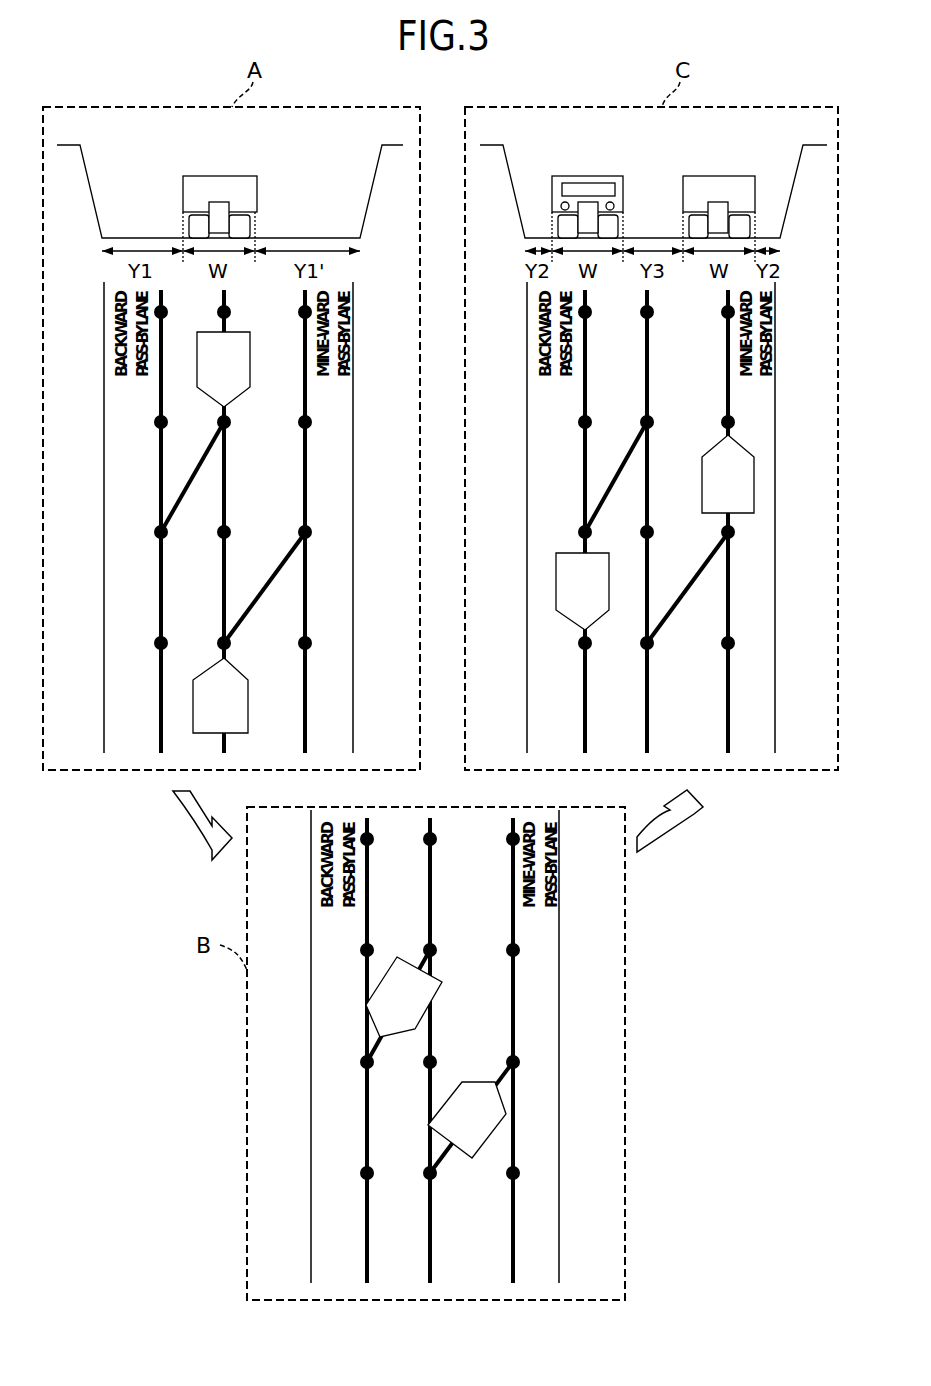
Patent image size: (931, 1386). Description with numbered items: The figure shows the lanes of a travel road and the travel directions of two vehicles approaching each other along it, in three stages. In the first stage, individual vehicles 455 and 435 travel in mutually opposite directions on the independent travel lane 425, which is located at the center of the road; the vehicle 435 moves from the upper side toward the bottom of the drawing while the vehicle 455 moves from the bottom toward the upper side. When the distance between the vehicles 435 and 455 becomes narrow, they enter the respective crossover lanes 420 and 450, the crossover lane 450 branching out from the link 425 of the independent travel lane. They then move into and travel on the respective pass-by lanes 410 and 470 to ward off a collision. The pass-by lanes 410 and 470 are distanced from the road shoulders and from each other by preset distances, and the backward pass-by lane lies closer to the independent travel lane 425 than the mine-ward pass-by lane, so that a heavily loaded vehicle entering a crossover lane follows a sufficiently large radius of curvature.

The pass-by lane 410 is at (161, 398).
The crossover lane 420 is at (197, 470).
The independent travel lane 425 is at (220, 655).
The vehicle 435 is at (590, 176).
The crossover lane 450 is at (259, 598).
The vehicle 455 is at (221, 176).
The pass-by lane 470 is at (728, 398).